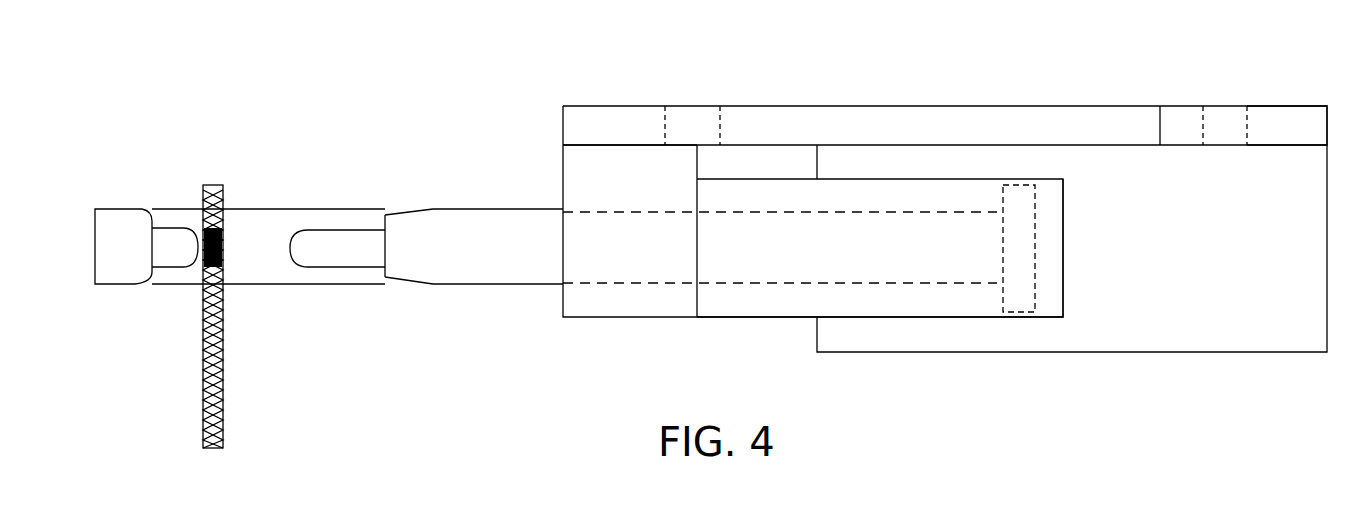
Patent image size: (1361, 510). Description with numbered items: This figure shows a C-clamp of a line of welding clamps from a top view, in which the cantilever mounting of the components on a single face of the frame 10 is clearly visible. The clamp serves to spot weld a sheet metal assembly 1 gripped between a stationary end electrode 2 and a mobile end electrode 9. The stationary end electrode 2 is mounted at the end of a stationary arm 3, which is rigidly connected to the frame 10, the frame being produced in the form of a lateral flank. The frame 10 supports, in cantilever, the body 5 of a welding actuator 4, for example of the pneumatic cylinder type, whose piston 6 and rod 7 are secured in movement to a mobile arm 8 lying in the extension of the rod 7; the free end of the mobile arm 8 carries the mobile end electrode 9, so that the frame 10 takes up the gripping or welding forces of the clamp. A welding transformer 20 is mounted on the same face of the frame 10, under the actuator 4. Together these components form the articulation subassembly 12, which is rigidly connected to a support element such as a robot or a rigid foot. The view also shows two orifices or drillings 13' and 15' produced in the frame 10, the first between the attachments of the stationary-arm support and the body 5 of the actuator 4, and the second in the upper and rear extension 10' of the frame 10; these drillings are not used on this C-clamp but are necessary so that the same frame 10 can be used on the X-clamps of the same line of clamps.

The sheet metal assembly 1 is at (203, 377).
The stationary end electrode 2 is at (172, 255).
The stationary arm 3 is at (131, 230).
The welding actuator 4 is at (1066, 293).
The body 5 is at (671, 303).
The piston 6 is at (1021, 294).
The rod 7 is at (611, 246).
The mobile arm 8 is at (453, 260).
The mobile end electrode 9 is at (325, 256).
The frame 10 is at (945, 92).
The upper and rear extension 10' is at (1296, 93).
The articulation subassembly 12 is at (541, 192).
The orifice 13' is at (683, 86).
The orifice 15' is at (1243, 87).
The welding transformer 20 is at (1276, 294).